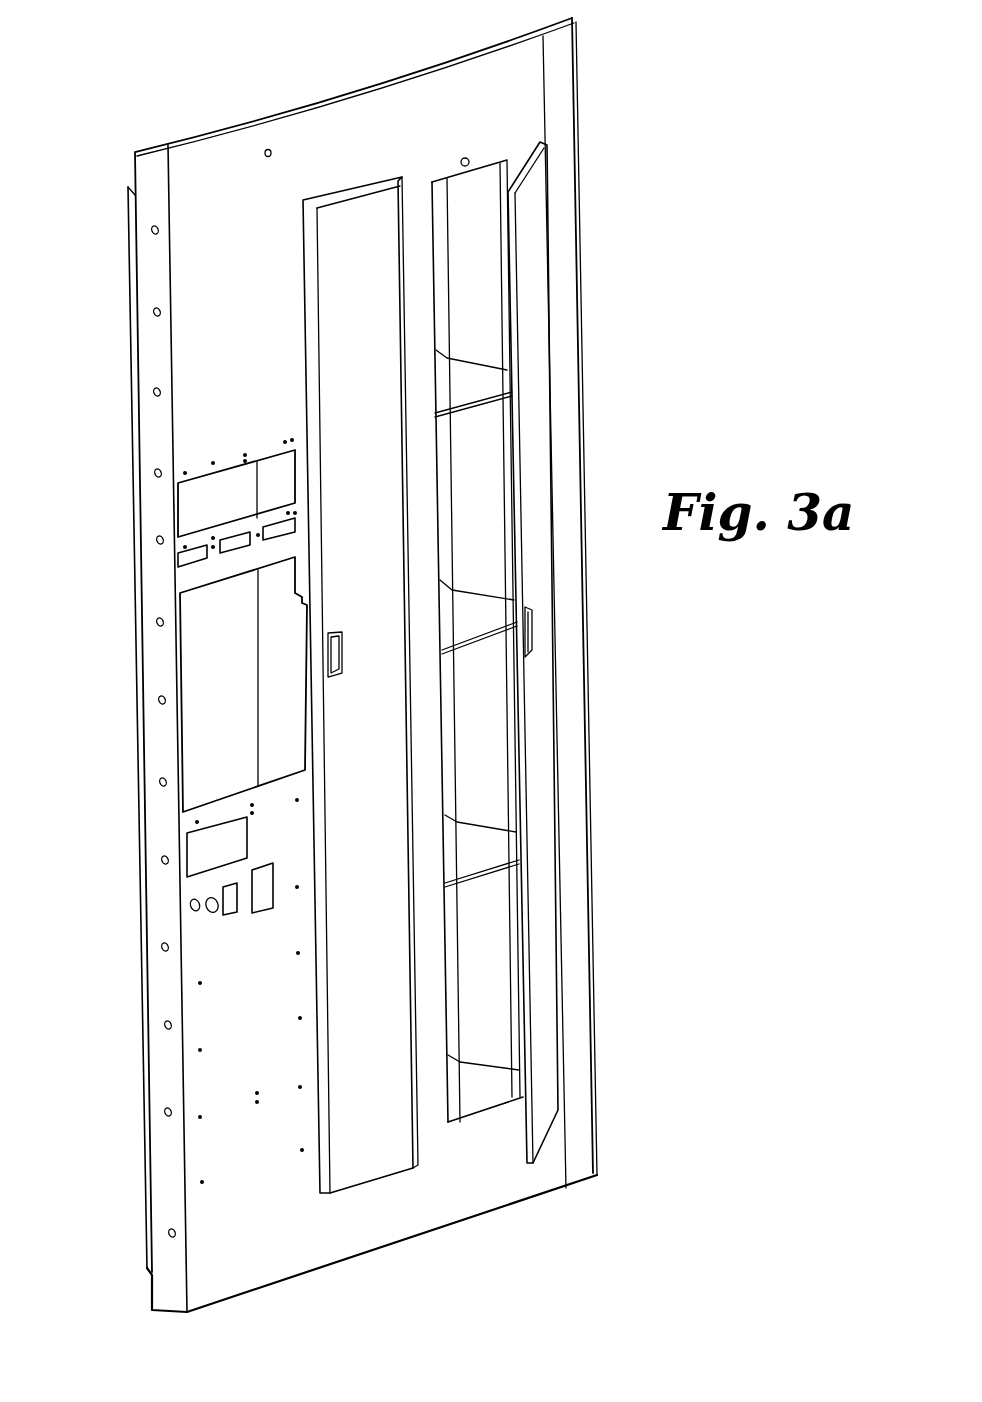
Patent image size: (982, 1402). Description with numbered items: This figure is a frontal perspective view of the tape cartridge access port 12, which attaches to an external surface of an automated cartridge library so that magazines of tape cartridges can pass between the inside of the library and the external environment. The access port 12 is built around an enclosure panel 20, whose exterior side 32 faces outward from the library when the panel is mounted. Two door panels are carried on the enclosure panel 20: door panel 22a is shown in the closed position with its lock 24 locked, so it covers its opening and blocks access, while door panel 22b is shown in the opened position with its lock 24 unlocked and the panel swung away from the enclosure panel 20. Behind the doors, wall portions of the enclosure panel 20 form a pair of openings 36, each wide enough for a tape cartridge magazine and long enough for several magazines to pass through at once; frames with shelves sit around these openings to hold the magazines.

The tape cartridge access port 12 is at (268, 116).
The enclosure panel 20 is at (329, 118).
The exterior side 32 is at (202, 165).
The openings 36 is at (483, 163).
The lock 24 is at (342, 652).
The door panel 22a is at (372, 1167).
The door panel 22b is at (547, 1138).